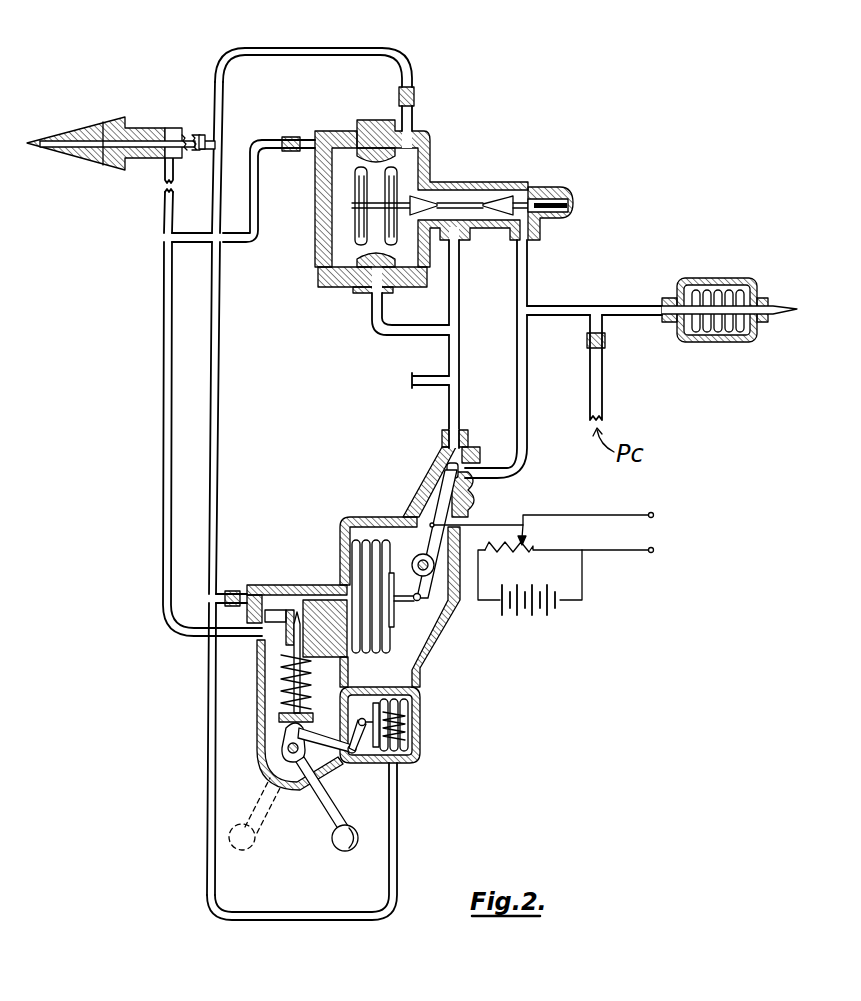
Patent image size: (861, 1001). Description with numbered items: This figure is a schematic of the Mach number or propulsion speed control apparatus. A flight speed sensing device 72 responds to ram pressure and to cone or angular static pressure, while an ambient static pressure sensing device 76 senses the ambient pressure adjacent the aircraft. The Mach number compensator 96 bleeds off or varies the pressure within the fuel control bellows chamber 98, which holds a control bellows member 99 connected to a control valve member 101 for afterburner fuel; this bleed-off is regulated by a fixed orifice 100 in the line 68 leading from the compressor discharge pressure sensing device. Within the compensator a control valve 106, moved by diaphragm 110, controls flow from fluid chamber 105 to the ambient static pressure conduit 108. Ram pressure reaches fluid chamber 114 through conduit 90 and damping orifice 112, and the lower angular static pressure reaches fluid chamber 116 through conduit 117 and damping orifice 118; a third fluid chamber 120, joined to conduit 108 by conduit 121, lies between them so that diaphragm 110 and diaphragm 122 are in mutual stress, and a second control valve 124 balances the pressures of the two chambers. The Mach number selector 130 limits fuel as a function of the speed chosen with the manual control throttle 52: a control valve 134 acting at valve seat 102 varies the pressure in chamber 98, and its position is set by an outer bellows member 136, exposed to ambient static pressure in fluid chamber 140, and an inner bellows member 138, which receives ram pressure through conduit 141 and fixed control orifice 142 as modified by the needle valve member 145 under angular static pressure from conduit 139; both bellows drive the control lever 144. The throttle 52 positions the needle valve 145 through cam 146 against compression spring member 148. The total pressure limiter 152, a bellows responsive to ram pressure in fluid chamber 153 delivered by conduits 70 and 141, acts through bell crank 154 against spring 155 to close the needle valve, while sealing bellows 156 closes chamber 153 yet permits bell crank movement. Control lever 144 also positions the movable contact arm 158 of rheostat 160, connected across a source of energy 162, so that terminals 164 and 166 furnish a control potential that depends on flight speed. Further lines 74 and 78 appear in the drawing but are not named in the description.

The manual control throttle 52 is at (333, 846).
The line 68 is at (603, 405).
The conduit 70 is at (209, 137).
The Mach number or flight speed sensing device 72 is at (113, 124).
The conduit 74 is at (165, 211).
The ambient static pressure sensing device 76 is at (412, 380).
The conduit 78 is at (641, 306).
The conduit 90 is at (298, 48).
The Mach number compensator 96 is at (412, 201).
The fuel control bellows chamber 98 is at (729, 313).
The control bellows member 99 is at (720, 332).
The fixed orifice 100 is at (598, 350).
The control valve member 101 is at (780, 316).
The valve seat 102 is at (478, 490).
The fluid chamber 105 is at (522, 346).
The control valve 106 is at (528, 187).
The ambient static pressure conduit 108 is at (460, 284).
The diaphragm 110 is at (433, 148).
The damping orifice 112 is at (410, 85).
The fluid chamber 114 is at (423, 166).
The fluid chamber 116 is at (338, 268).
The conduit 117 is at (240, 246).
The damping orifice 118 is at (293, 138).
The third fluid chamber 120 is at (360, 228).
The conduit 121 is at (380, 322).
The diaphragm 122 is at (357, 160).
The second control valve 124 is at (438, 190).
The Mach number selector 130 is at (345, 513).
The control valve 134 is at (440, 471).
The outer bellows member 136 is at (384, 656).
The inner bellows member 138 is at (352, 578).
The conduit 139 is at (165, 427).
The fluid chamber 140 is at (408, 662).
The conduit 141 is at (221, 435).
The fixed control orifice 142 is at (236, 590).
The control lever 144 is at (427, 590).
The needle valve member 145 is at (287, 633).
The cam 146 is at (293, 733).
The compression spring member 148 is at (287, 678).
The total pressure limiter 152 is at (435, 722).
The fluid chamber 153 is at (408, 759).
The bell crank 154 is at (322, 742).
The spring 155 is at (397, 727).
The sealing bellows 156 is at (273, 814).
The movable contact arm 158 is at (525, 527).
The rheostat 160 is at (517, 558).
The source of energy 162 is at (548, 615).
The terminal 164 is at (653, 513).
The terminal 166 is at (653, 553).